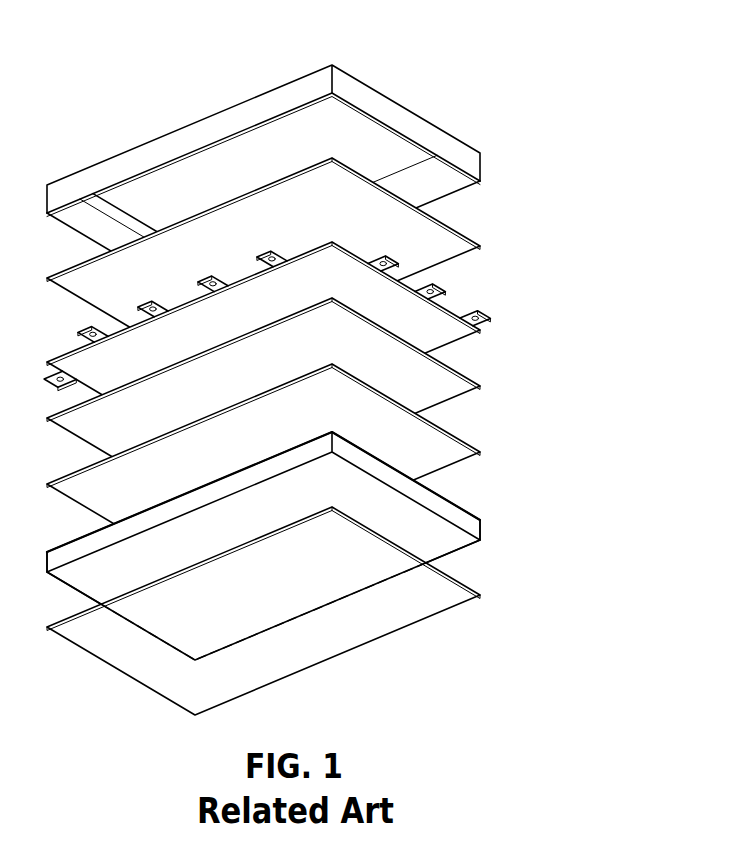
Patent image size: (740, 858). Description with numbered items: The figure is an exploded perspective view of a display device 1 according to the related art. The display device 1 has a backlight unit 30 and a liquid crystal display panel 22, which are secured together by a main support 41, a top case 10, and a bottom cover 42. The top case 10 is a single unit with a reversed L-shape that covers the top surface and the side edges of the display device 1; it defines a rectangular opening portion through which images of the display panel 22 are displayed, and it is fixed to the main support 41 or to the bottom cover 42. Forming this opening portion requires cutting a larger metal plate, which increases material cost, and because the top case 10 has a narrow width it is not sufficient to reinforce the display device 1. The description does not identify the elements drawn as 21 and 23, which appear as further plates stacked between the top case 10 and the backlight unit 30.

The display device 1 is at (427, 32).
The top case 10 is at (481, 168).
The display panel 21 is at (482, 247).
The liquid crystal display panel 22 is at (482, 329).
The optical sheet 23 is at (482, 387).
The backlight unit 30 is at (482, 453).
The main support 41 is at (482, 527).
The bottom cover 42 is at (482, 595).